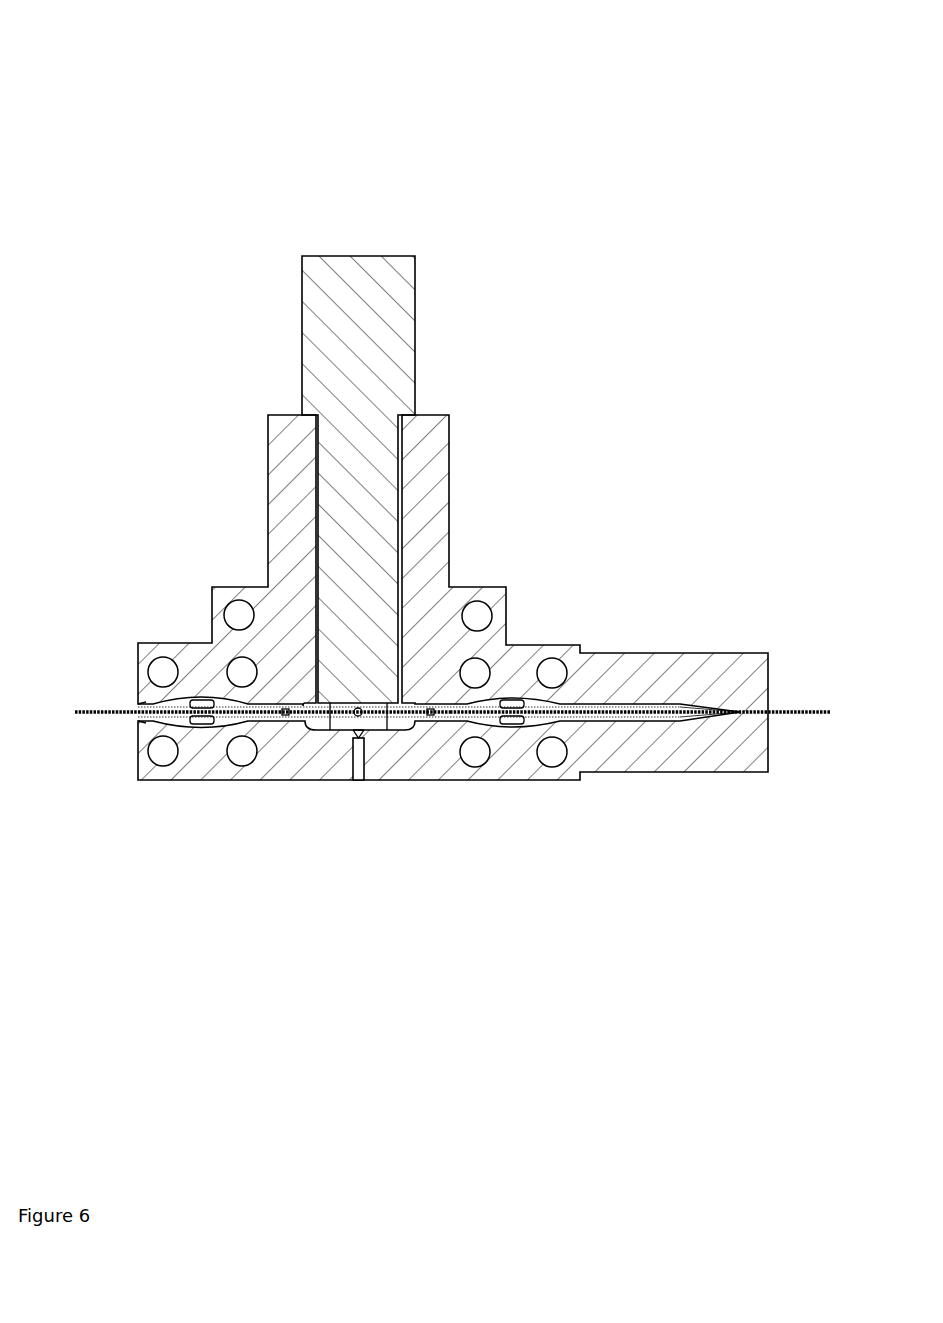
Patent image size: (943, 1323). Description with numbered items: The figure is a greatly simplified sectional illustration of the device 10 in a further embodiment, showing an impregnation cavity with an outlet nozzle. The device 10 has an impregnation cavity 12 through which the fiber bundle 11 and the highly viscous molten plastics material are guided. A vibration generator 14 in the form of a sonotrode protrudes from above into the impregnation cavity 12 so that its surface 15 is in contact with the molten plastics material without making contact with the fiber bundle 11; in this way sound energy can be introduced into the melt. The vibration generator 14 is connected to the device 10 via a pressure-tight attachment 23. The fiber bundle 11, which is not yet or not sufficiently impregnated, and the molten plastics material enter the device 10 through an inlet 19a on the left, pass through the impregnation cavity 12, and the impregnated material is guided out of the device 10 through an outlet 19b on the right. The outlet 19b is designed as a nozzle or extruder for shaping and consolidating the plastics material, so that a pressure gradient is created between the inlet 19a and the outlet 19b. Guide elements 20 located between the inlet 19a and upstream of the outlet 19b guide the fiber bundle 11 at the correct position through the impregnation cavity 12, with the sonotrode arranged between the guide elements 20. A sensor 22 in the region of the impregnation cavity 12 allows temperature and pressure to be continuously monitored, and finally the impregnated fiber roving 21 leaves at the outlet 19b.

The device 10 is at (52, 26).
The fiber bundle 11 is at (120, 713).
The impregnation cavity 12 is at (400, 700).
The vibration generator 14 is at (357, 347).
The surface 15 is at (321, 730).
The inlet 19a is at (137, 707).
The outlet 19b is at (697, 708).
The guide elements 20 is at (200, 725).
The impregnated fiber roving 21 is at (793, 715).
The sensor 22 is at (435, 712).
The pressure-tight attachment 23 is at (413, 412).